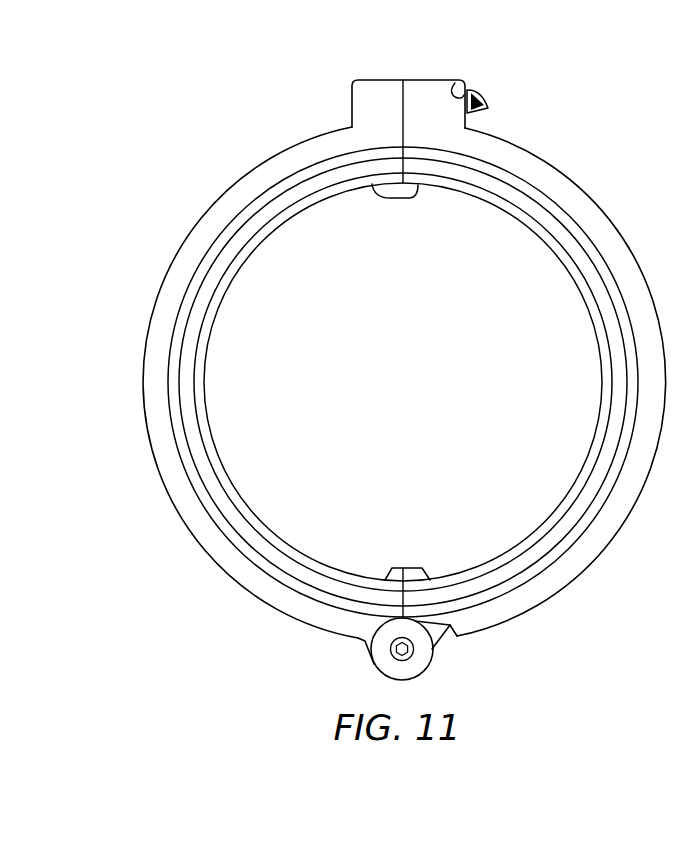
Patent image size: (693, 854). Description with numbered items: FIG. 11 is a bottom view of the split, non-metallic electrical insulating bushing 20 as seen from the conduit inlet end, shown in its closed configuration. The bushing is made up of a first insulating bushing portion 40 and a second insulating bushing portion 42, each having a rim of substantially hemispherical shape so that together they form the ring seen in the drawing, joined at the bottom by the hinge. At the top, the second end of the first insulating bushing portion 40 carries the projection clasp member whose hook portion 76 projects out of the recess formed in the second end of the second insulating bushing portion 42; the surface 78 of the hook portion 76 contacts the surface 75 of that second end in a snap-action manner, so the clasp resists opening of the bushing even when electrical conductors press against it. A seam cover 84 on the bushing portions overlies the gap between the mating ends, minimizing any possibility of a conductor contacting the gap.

The split non-metallic electrical insulating bushing 20 is at (410, 351).
The first insulating bushing portion 40 is at (190, 214).
The second insulating bushing portion 42 is at (656, 275).
The surface of second end 75 is at (470, 125).
The hook portion 76 is at (480, 97).
The surface of the hook portion 78 is at (456, 82).
The seam cover 84 is at (397, 192).